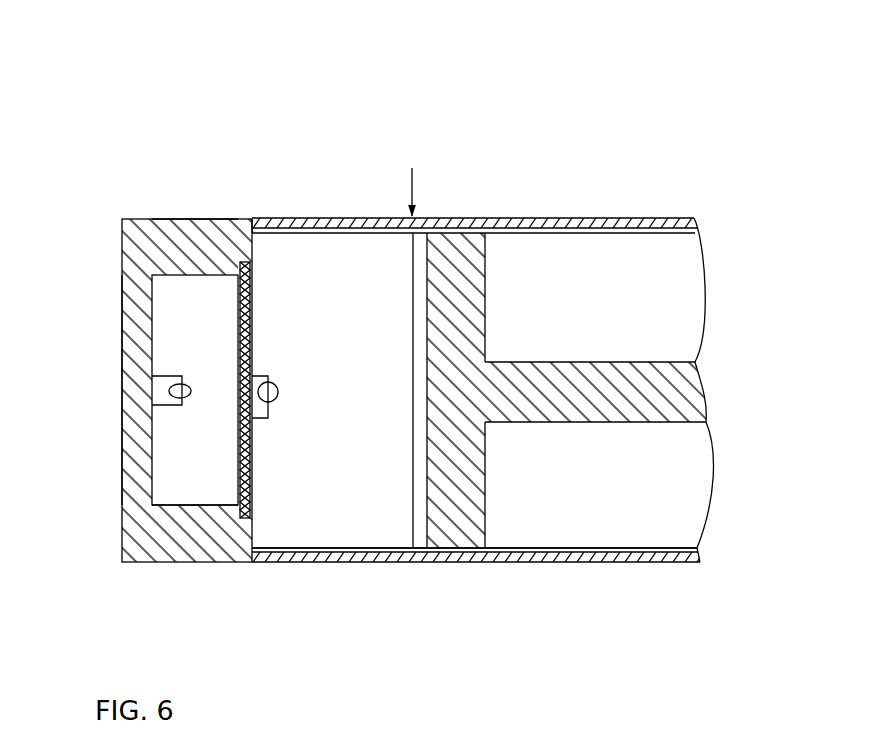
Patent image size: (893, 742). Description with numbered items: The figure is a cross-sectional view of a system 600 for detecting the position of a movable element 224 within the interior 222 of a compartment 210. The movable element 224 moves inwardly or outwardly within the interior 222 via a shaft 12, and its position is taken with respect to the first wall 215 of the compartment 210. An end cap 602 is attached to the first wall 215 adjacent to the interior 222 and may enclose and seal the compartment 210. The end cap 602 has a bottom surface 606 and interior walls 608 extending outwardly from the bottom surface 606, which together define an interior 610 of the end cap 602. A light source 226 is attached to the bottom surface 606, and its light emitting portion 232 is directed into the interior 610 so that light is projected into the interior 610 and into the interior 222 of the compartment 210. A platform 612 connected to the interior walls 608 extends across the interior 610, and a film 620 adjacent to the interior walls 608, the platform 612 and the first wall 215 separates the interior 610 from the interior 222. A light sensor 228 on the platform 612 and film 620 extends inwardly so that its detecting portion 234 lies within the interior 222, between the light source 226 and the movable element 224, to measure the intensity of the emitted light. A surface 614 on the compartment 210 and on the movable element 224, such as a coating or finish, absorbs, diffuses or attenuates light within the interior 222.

The system 600 is at (318, 138).
The end cap 602 is at (143, 384).
The bottom surface 606 is at (140, 305).
The interior walls 608 is at (185, 262).
The interior of the end cap 610 is at (170, 470).
The platform 612 is at (236, 490).
The film 620 is at (251, 308).
The first wall 215 is at (247, 226).
The compartment 210 is at (536, 216).
The interior of the compartment 222 is at (690, 250).
The movable element 224 is at (478, 320).
The shaft 12 is at (688, 388).
The light source 226 is at (128, 366).
The light emitting portion 232 is at (195, 362).
The detecting portion 234 is at (278, 392).
The light sensor 228 is at (311, 426).
The surface 614 is at (283, 233).